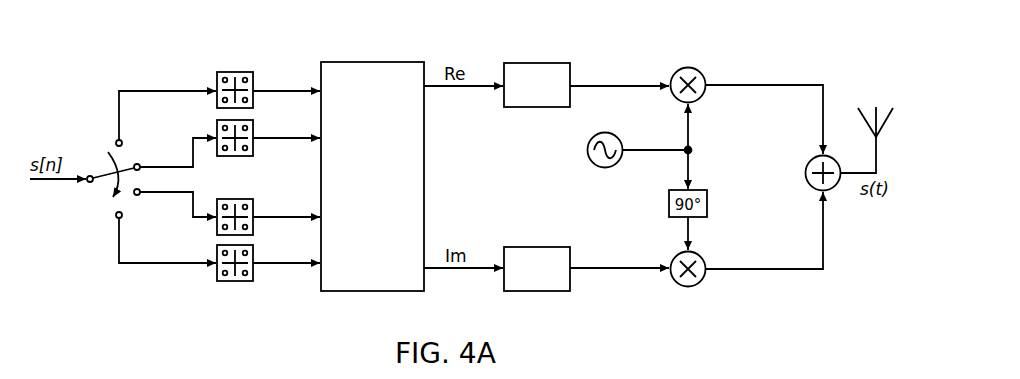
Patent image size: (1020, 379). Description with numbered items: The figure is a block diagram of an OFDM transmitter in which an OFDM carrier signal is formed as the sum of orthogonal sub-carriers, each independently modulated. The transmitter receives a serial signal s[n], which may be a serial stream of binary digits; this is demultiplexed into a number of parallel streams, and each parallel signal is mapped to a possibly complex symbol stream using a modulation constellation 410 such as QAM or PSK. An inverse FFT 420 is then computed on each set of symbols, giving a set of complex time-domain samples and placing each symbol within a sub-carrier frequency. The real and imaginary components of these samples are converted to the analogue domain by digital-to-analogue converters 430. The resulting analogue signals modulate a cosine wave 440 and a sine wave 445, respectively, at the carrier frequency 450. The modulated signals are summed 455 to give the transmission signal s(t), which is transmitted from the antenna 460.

The modulation constellation 410 is at (236, 72).
The inverse FFT 420 is at (415, 283).
The digital-to-analogue converters 430 is at (548, 63).
The cosine wave 440 is at (690, 68).
The sine wave 445 is at (697, 258).
The carrier frequency 450 is at (607, 132).
The summer 455 is at (812, 158).
The antenna 460 is at (873, 125).